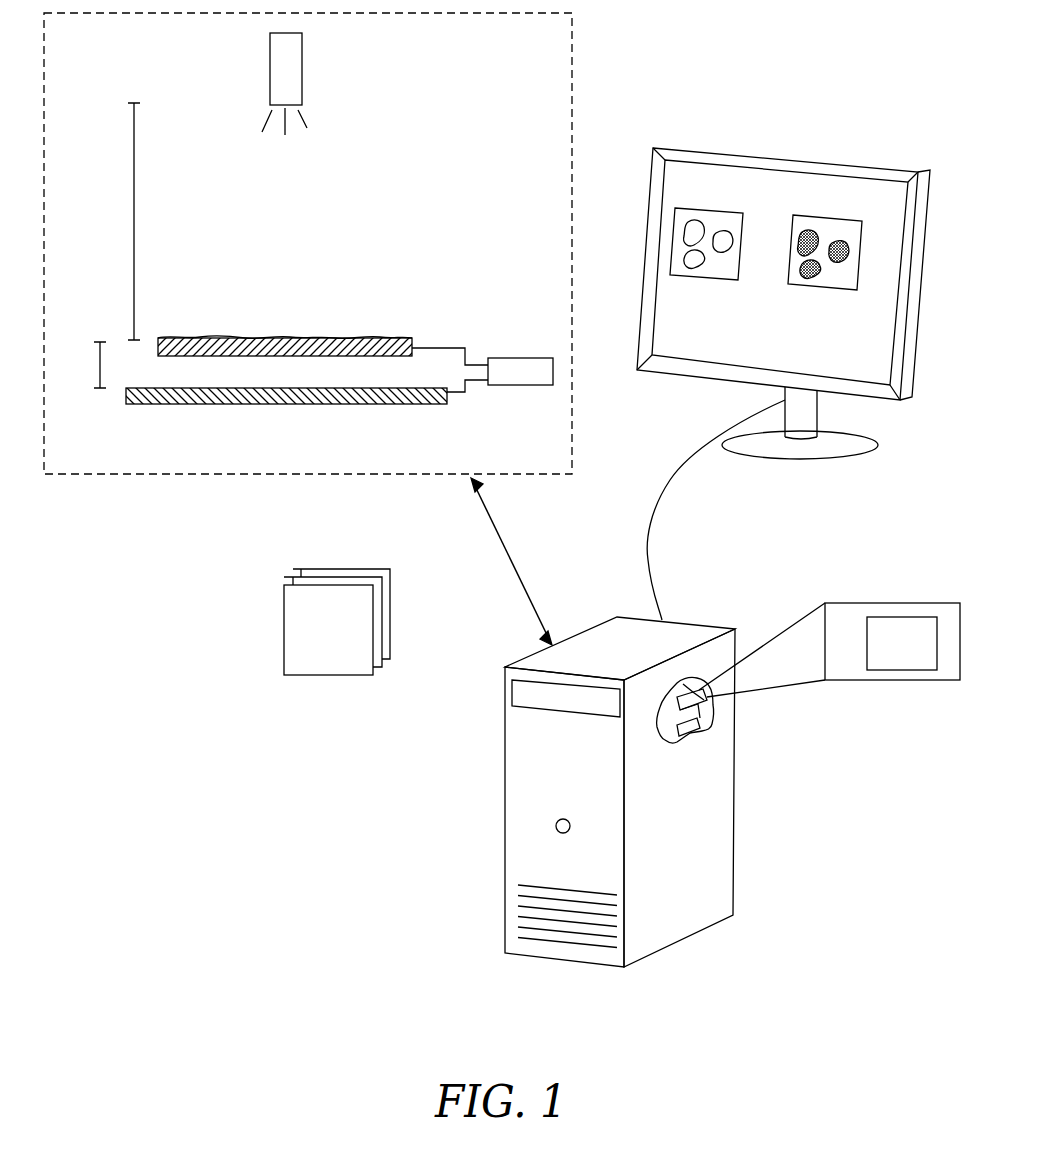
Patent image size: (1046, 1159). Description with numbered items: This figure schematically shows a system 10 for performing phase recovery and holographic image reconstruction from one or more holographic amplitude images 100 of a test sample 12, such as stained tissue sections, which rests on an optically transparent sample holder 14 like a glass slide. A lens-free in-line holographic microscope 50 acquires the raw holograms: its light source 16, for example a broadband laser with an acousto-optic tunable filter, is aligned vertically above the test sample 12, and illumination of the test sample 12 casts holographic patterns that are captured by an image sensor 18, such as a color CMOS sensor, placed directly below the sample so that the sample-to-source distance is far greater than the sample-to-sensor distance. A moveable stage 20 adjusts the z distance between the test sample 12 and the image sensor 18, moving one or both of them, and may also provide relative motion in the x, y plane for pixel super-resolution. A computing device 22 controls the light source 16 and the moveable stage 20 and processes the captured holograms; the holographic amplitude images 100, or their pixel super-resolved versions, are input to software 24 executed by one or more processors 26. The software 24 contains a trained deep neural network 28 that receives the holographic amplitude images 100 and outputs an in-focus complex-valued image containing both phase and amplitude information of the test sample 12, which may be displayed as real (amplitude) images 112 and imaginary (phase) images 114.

The system 10 is at (232, 810).
The test sample 12 is at (318, 337).
The sample holder 14 is at (410, 343).
The light source 16 is at (303, 62).
The image sensor 18 is at (182, 405).
The moveable stage 20 is at (517, 356).
The computing device 22 is at (505, 778).
The software 24 is at (690, 677).
The processors 26 is at (712, 730).
The trained deep neural network 28 is at (907, 652).
The lens-free in-line holographic microscope 50 is at (572, 28).
The holographic amplitude images 100 is at (284, 620).
The real (amplitude) images 112 is at (715, 207).
The imaginary (phase) images 114 is at (830, 216).